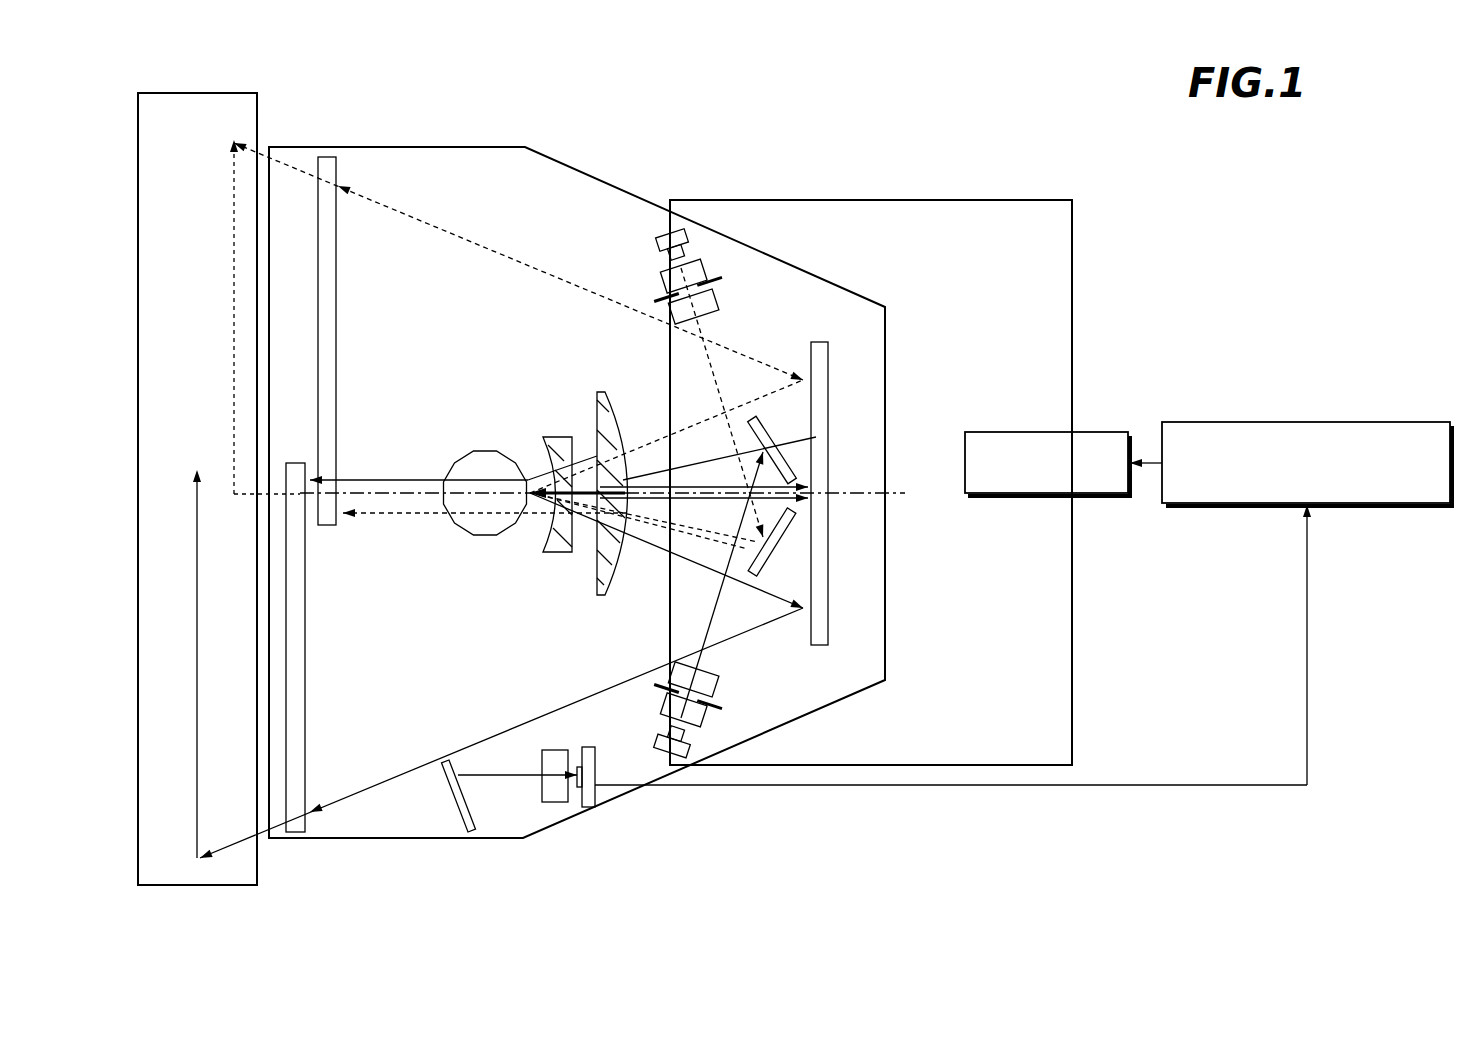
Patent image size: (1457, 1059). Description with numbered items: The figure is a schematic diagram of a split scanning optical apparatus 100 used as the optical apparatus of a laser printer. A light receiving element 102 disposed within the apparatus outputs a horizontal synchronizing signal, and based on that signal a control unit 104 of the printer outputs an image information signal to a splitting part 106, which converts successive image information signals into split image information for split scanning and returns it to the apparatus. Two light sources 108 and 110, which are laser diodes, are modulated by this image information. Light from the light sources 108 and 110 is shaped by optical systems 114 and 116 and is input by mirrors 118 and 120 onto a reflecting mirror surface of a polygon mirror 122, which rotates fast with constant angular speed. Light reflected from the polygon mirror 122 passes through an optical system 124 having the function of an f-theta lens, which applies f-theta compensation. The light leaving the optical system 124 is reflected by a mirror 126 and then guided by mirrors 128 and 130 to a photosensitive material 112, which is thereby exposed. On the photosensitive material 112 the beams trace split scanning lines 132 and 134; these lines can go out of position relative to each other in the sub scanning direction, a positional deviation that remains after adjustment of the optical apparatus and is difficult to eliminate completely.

The split scanning optical apparatus 100 is at (900, 144).
The light receiving element 102 is at (597, 792).
The control unit 104 is at (1353, 422).
The splitting part 106 is at (1102, 432).
The light source 108 is at (690, 755).
The light source 110 is at (655, 247).
The photosensitive material 112 is at (220, 93).
The optical system 114 is at (745, 694).
The optical system 116 is at (740, 298).
The mirror 118 is at (775, 442).
The mirror 120 is at (785, 530).
The polygon mirror 122 is at (497, 449).
The optical system 124 is at (603, 393).
The mirror 126 is at (829, 355).
The mirror 128 is at (305, 703).
The mirror 130 is at (337, 298).
The split scanning line 132 is at (196, 697).
The split scanning line 134 is at (233, 322).